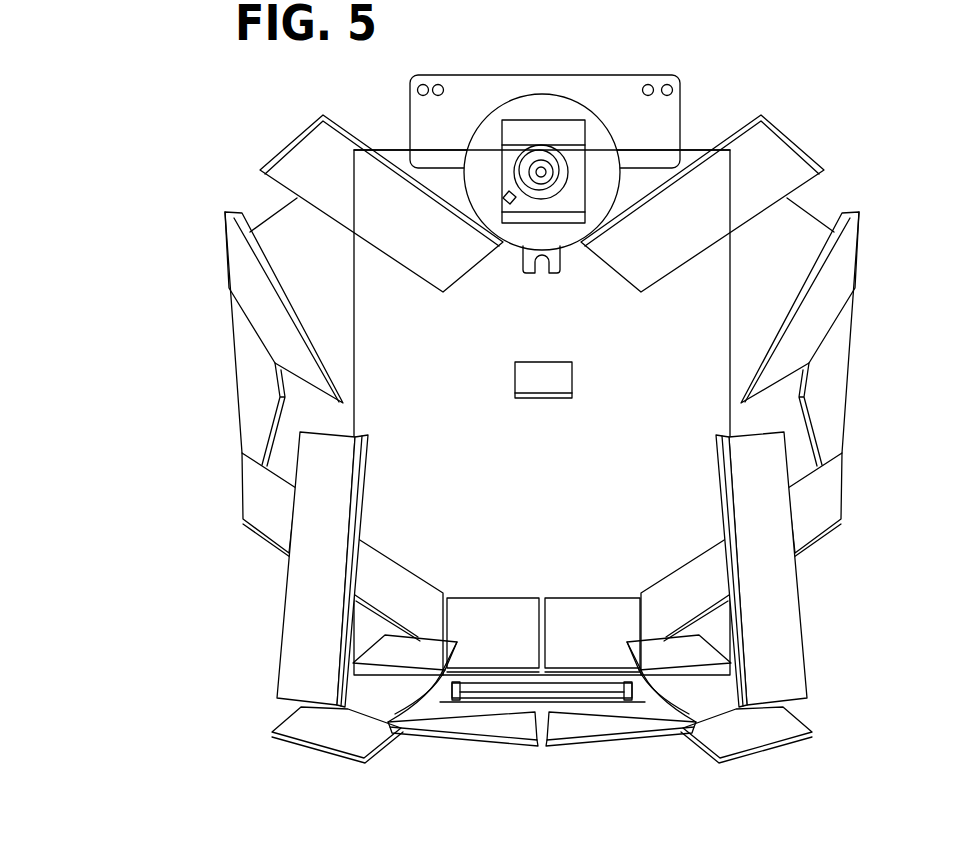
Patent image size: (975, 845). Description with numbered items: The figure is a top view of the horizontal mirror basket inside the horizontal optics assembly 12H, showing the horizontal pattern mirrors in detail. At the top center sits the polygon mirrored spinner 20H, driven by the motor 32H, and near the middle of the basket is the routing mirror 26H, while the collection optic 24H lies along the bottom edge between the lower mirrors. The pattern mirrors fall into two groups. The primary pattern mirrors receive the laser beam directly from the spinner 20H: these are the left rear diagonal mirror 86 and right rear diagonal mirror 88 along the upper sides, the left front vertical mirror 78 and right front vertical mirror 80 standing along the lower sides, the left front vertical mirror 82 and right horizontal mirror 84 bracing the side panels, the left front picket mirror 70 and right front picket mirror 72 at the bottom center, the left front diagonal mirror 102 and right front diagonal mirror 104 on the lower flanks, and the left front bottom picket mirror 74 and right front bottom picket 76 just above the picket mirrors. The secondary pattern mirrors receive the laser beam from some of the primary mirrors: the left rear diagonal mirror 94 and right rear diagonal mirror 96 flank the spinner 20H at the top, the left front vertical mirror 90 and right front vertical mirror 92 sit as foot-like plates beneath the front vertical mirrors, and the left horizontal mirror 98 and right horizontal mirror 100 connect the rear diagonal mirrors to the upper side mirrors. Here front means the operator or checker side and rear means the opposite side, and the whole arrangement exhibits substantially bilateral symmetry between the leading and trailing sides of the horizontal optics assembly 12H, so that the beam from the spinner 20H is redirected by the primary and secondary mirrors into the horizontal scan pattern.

The horizontal optics assembly 12H is at (165, 131).
The polygon mirrored spinner 20H is at (542, 120).
The motor 32H is at (595, 127).
The collection optic 24H is at (582, 693).
The routing mirror 26H is at (543, 385).
The left front picket mirror 70 is at (482, 723).
The right front picket mirror 72 is at (572, 727).
The left front bottom picket mirror 74 is at (488, 613).
The right front bottom picket 76 is at (582, 613).
The left front vertical mirror 78 is at (298, 613).
The right front vertical mirror 80 is at (786, 633).
The left front vertical mirror 82 is at (247, 378).
The right horizontal mirror 84 is at (837, 378).
The left rear diagonal mirror 86 is at (240, 270).
The right rear diagonal mirror 88 is at (845, 270).
The left front vertical mirror 90 is at (337, 732).
The right front vertical mirror 92 is at (752, 735).
The left rear diagonal mirror 94 is at (297, 137).
The right rear diagonal mirror 96 is at (783, 153).
The left horizontal mirror 98 is at (275, 223).
The right horizontal mirror 100 is at (803, 217).
The left front diagonal mirror 102 is at (257, 490).
The right front diagonal mirror 104 is at (830, 490).